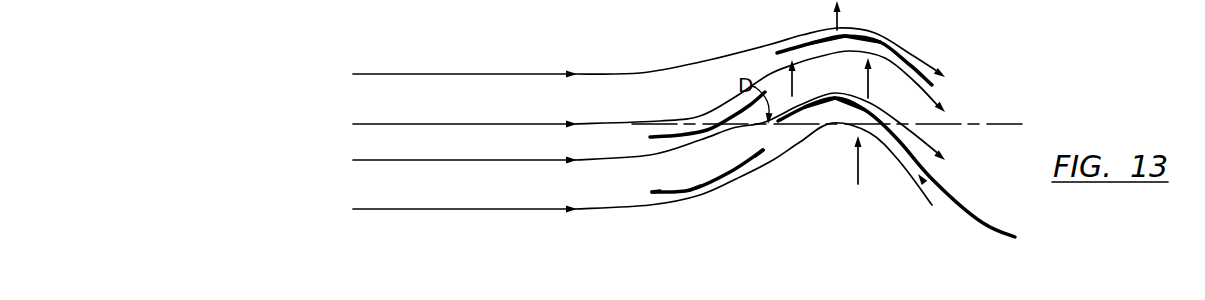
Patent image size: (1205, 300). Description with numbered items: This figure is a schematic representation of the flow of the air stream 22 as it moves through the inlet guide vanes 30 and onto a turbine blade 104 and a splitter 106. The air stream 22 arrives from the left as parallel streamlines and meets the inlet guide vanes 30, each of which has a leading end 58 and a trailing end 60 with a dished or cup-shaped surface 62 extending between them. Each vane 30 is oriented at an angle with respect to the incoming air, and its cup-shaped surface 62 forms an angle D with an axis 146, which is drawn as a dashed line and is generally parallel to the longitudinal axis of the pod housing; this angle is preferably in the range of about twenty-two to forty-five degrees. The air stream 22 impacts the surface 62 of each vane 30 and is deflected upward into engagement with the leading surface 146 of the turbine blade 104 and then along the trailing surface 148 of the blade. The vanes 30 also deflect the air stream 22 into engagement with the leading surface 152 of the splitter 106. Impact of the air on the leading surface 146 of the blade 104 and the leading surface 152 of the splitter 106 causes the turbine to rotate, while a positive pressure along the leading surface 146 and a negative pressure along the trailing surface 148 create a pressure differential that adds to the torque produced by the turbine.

The air stream 22 is at (370, 74).
The inlet guide vane 30 is at (660, 112).
The leading end 58 is at (652, 193).
The trailing end 60 is at (768, 150).
The cup-shaped surface 62 is at (697, 187).
The turbine blade 104 is at (967, 183).
The splitter 106 is at (928, 42).
The axis 146 is at (990, 124).
The trailing surface 148 is at (871, 112).
The leading surface of splitter 152 is at (849, 40).